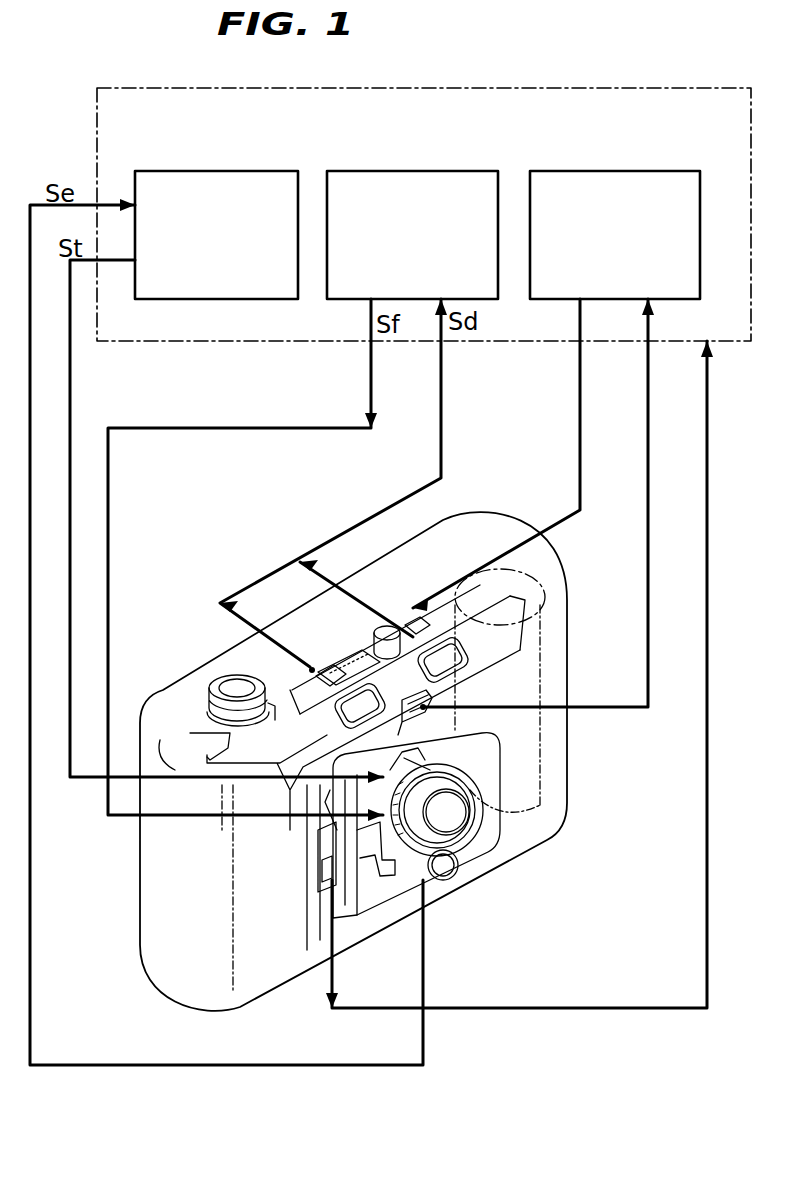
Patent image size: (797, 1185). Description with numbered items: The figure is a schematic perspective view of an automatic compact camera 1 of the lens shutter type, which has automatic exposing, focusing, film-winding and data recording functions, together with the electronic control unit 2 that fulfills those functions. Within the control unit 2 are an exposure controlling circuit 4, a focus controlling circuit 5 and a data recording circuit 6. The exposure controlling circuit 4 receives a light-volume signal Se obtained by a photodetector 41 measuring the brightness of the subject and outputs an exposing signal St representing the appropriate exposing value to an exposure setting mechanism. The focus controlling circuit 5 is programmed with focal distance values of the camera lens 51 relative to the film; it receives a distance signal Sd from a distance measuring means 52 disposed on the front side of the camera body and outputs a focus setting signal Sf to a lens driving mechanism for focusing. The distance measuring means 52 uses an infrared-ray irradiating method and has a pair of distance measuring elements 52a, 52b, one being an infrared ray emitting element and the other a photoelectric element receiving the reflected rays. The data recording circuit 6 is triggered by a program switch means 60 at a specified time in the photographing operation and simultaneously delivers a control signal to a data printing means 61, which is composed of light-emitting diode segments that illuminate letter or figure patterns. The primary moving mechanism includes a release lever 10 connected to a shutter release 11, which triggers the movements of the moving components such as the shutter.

The camera 1 is at (353, 761).
The electronic control unit 2 is at (571, 88).
The exposure controlling circuit 4 is at (218, 298).
The focus controlling circuit 5 is at (355, 298).
The data recording circuit 6 is at (563, 299).
The release lever 10 is at (210, 737).
The shutter release 11 is at (237, 687).
The photodetector 41 is at (452, 876).
The camera lens 51 is at (450, 813).
The distance measuring means 52 is at (200, 535).
The distance measuring element 52a is at (400, 633).
The distance measuring element 52b is at (330, 680).
The program switch means 60 is at (420, 711).
The data printing means 61 is at (410, 635).